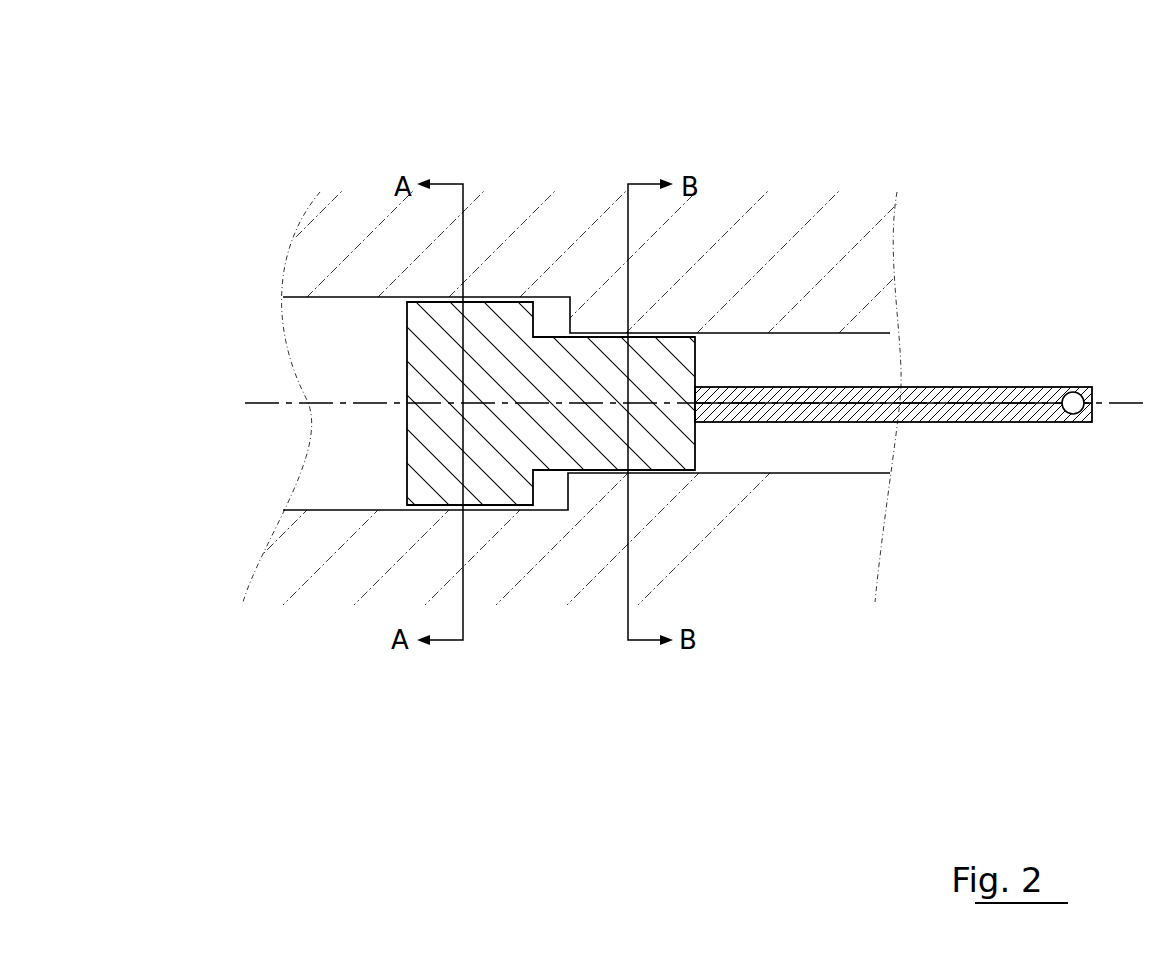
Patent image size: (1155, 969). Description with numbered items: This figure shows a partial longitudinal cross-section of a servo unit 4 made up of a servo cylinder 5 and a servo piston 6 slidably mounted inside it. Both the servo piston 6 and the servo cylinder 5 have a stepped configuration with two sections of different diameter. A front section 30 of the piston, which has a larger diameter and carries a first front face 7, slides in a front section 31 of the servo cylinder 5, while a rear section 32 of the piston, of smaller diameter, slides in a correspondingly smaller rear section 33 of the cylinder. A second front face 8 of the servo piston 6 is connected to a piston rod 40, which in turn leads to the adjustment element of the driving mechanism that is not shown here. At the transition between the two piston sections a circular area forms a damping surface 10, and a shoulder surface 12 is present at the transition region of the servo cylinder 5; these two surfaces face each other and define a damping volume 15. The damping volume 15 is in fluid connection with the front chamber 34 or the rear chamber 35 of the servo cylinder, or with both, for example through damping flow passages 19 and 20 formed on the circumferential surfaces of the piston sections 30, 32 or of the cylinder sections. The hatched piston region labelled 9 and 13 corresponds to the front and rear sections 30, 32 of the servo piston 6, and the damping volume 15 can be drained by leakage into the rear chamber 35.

The servo unit 4 is at (380, 153).
The servo cylinder 5 is at (529, 420).
The servo piston 6 is at (608, 509).
The first front face 7 is at (567, 502).
The second front face 8 is at (893, 414).
The sensor body step 9 is at (608, 509).
The damping surface 10 is at (568, 498).
The shoulder surface 12 is at (608, 509).
The sealing surface 13 is at (608, 454).
The damping volume 15 is at (529, 420).
The damping flow passage 19 is at (529, 440).
The damping flow passage 20 is at (529, 420).
The front section of servo piston 30 is at (608, 509).
The front section of servo cylinder 31 is at (529, 420).
The rear section of servo piston 32 is at (655, 453).
The rear section of servo cylinder 33 is at (529, 420).
The front chamber 34 is at (529, 420).
The rear chamber 35 is at (529, 420).
The piston rod 40 is at (910, 413).